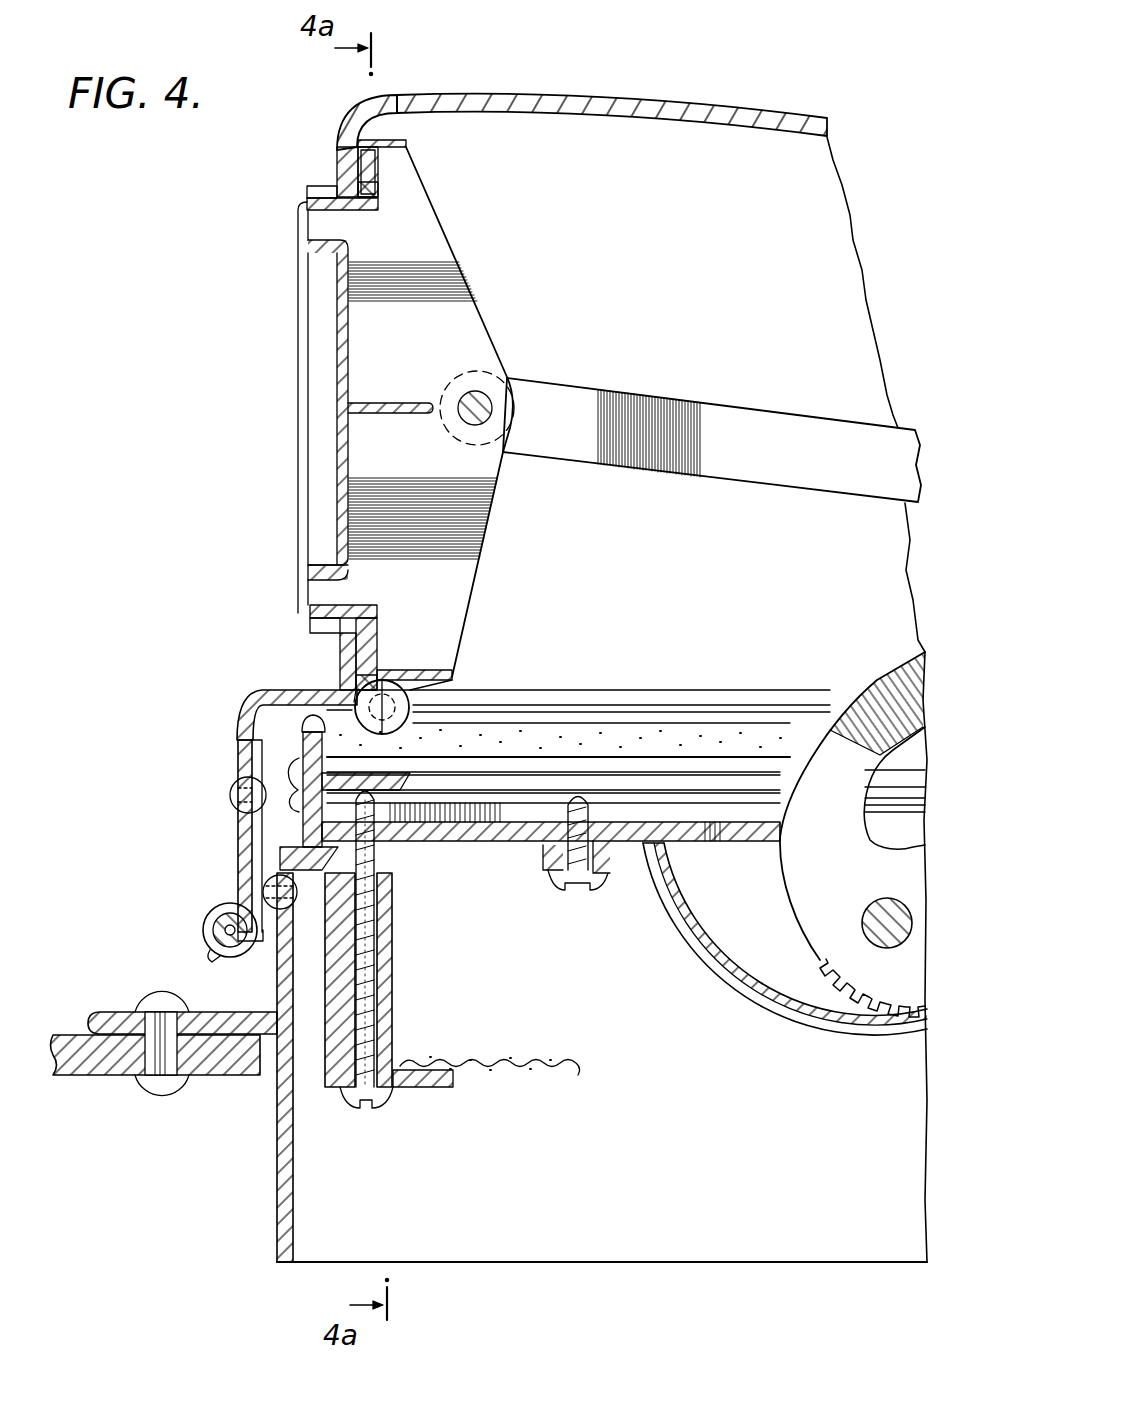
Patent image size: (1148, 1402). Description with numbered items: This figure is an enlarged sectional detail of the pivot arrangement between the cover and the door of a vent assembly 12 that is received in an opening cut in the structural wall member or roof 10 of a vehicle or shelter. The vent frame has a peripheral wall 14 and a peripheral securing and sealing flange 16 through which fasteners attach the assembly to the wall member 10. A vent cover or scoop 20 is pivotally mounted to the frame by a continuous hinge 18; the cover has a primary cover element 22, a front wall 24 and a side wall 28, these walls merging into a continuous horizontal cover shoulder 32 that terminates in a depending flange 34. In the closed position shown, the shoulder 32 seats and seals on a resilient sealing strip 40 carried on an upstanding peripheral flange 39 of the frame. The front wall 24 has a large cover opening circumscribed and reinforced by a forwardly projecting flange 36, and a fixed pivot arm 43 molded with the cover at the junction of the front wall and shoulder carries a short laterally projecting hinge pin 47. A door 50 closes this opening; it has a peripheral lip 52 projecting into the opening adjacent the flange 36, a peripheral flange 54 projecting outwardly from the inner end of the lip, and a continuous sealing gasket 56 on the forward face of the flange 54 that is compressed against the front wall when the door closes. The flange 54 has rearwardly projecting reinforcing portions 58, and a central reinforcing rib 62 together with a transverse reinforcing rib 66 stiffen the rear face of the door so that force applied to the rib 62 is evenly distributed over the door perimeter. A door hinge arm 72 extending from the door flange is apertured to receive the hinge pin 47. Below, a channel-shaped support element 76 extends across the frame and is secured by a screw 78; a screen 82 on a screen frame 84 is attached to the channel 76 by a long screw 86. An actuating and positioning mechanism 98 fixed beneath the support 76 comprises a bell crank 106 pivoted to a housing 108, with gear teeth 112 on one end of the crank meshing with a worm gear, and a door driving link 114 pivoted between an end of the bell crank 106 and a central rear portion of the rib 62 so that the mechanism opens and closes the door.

The structural wall member 10 is at (108, 1076).
The vent assembly 12 is at (488, 963).
The peripheral wall 14 is at (277, 1198).
The securing and sealing flange 16 is at (118, 1012).
The continuous hinge 18 is at (192, 915).
The vent cover 20 is at (598, 97).
The primary cover element 22 is at (760, 120).
The front wall 24 is at (337, 152).
The side wall 28 is at (905, 553).
The cover shoulder 32 is at (265, 691).
The depending flange 34 is at (238, 850).
The opening flange 36 is at (316, 184).
The upstanding peripheral flange 39 is at (305, 830).
The sealing strip 40 is at (300, 727).
The fixed pivot arm 43 is at (395, 749).
The hinge pin 47 is at (380, 745).
The door 50 is at (282, 330).
The peripheral lip 52 is at (298, 226).
The peripheral flange 54 is at (370, 190).
The sealing gasket 56 is at (366, 178).
The reinforcing portions 58 is at (407, 143).
The reinforcing rib 62 is at (487, 357).
The transverse reinforcing rib 66 is at (380, 402).
The door hinge arm 72 is at (412, 696).
The support element 76 is at (485, 846).
The screw 78 is at (298, 776).
The screen 82 is at (535, 1062).
The screen frame 84 is at (392, 976).
The screw 86 is at (385, 1105).
The actuating and positioning mechanism 98 is at (738, 1002).
The bell crank 106 is at (880, 683).
The housing 108 is at (700, 960).
The gear teeth 112 is at (823, 965).
The door driving link 114 is at (748, 410).